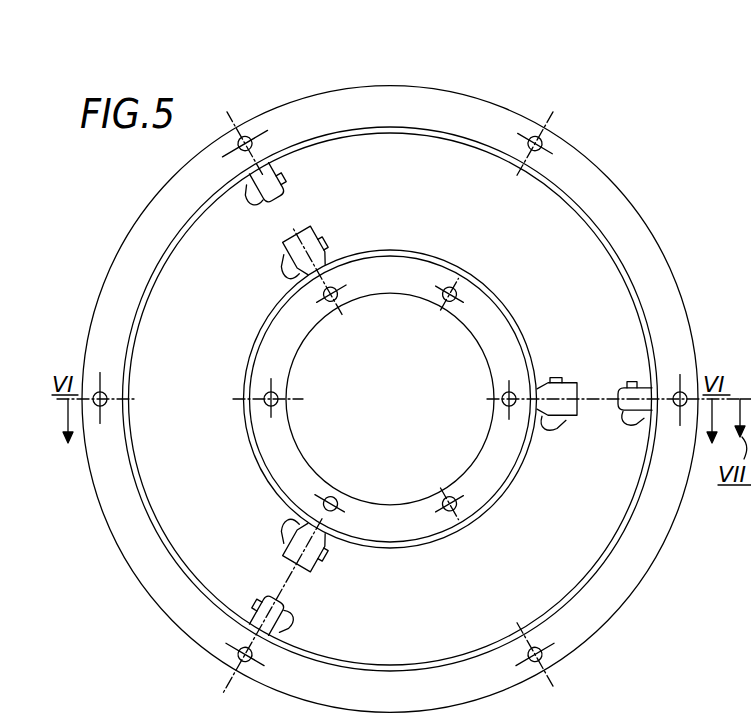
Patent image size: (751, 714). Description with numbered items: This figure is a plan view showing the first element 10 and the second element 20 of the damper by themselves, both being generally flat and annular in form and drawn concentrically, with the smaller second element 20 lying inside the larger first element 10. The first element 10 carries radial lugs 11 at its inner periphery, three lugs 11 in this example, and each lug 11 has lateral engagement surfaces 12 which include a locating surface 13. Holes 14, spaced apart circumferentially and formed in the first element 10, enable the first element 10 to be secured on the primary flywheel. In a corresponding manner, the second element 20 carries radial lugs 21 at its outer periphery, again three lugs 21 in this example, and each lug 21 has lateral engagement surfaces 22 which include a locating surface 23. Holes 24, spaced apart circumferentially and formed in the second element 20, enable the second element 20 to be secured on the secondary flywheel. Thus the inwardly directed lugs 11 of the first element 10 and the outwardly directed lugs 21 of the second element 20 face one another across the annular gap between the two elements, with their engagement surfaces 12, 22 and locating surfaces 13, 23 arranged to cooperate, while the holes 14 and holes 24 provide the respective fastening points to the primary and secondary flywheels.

The first element 10 is at (646, 203).
The radial lug 11 is at (282, 192).
The lateral engagement surface 12 is at (258, 208).
The locating surface 13 is at (280, 180).
The hole 14 is at (249, 146).
The second element 20 is at (470, 348).
The radial lug 21 is at (320, 238).
The lateral engagement surface 22 is at (285, 260).
The locating surface 23 is at (326, 248).
The hole 24 is at (336, 296).